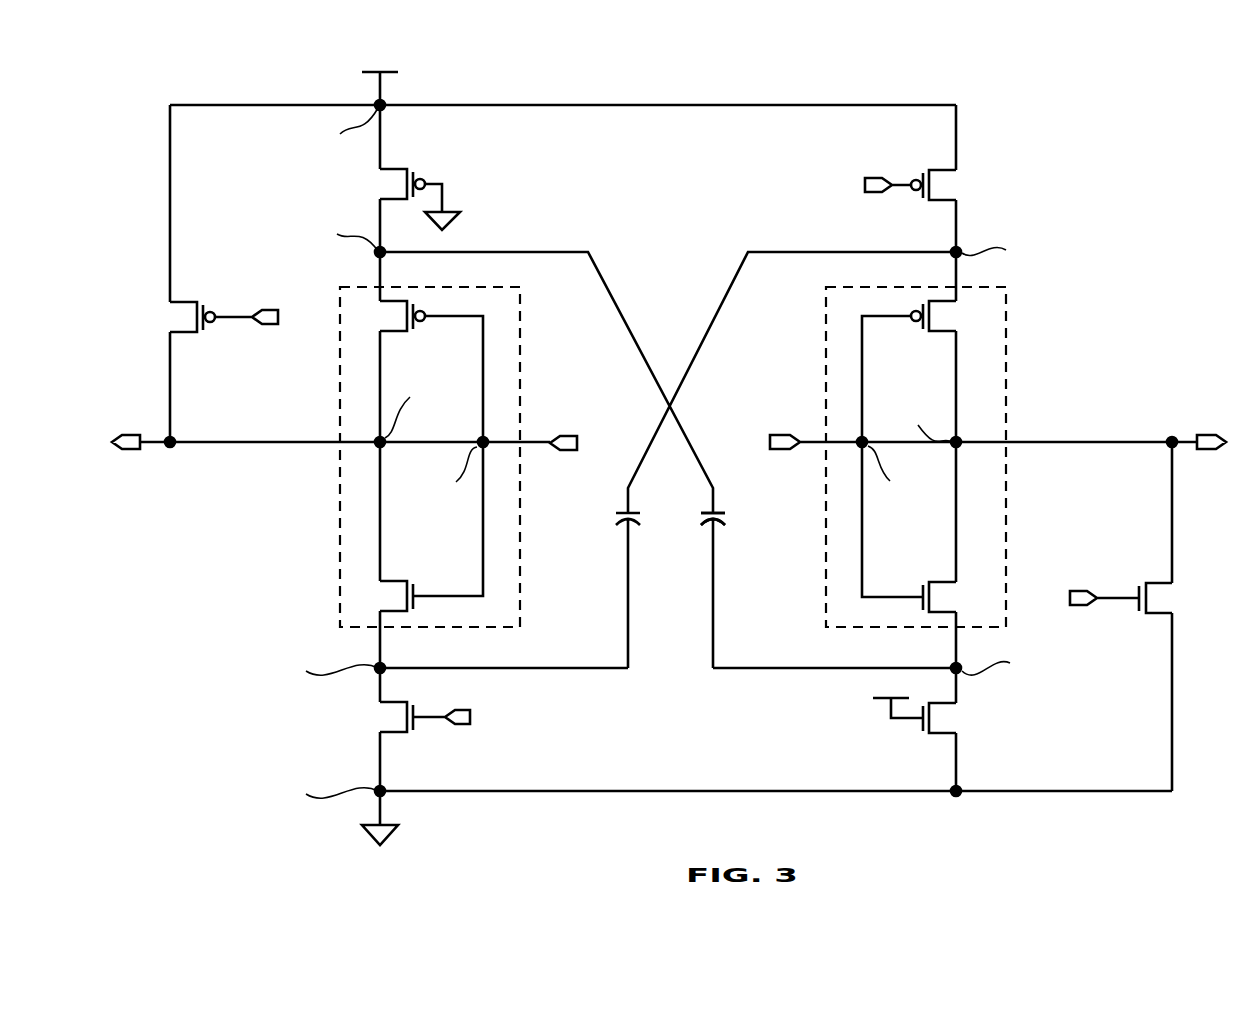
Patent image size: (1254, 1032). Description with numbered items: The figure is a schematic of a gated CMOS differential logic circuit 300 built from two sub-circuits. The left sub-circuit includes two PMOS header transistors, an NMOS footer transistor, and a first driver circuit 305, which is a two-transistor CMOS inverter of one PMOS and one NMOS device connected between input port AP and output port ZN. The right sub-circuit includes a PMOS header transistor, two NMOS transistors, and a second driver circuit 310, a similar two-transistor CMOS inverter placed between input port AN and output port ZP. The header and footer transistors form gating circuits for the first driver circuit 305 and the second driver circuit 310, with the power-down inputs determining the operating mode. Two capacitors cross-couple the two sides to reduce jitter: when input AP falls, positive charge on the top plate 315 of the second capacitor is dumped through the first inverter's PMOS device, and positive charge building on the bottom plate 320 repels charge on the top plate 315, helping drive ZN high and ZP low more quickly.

The gated CMOS differential logic circuit 300 is at (1143, 118).
The first driver circuit 305 is at (340, 566).
The second driver circuit 310 is at (1008, 346).
The top plate of capacitor C2 315 is at (703, 509).
The bottom plate of capacitor C2 320 is at (722, 529).